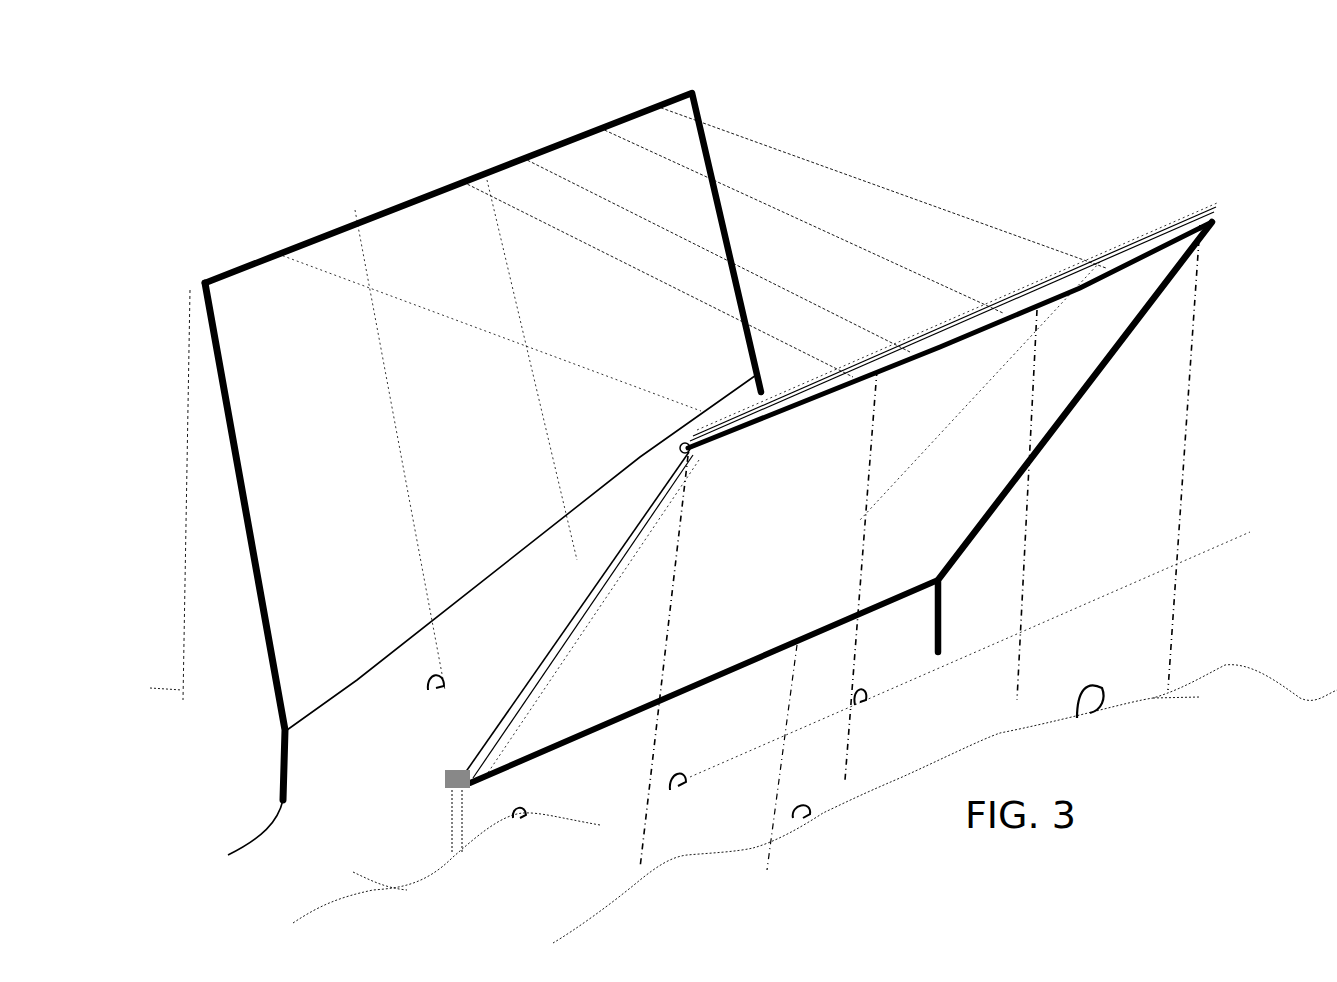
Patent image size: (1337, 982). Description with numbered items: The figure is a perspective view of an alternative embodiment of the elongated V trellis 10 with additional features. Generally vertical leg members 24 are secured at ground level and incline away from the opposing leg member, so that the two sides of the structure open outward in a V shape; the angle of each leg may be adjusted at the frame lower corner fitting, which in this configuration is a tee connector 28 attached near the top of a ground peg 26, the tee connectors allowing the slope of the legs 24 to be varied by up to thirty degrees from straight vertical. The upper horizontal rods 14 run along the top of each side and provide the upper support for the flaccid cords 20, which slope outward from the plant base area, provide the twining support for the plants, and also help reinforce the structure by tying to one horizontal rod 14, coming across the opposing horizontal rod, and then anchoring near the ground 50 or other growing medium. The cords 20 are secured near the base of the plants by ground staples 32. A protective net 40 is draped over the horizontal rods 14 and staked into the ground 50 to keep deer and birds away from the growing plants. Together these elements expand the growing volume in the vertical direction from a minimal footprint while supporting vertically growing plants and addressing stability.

The elongated V trellis 10 is at (816, 130).
The horizontal rod 14 is at (238, 272).
The flaccid cord 20 is at (853, 177).
The leg member 24 is at (268, 648).
The ground peg 26 is at (457, 837).
The tee connector 28 is at (453, 778).
The ground staple 32 is at (1074, 760).
The net 40 is at (182, 603).
The ground 50 is at (743, 804).